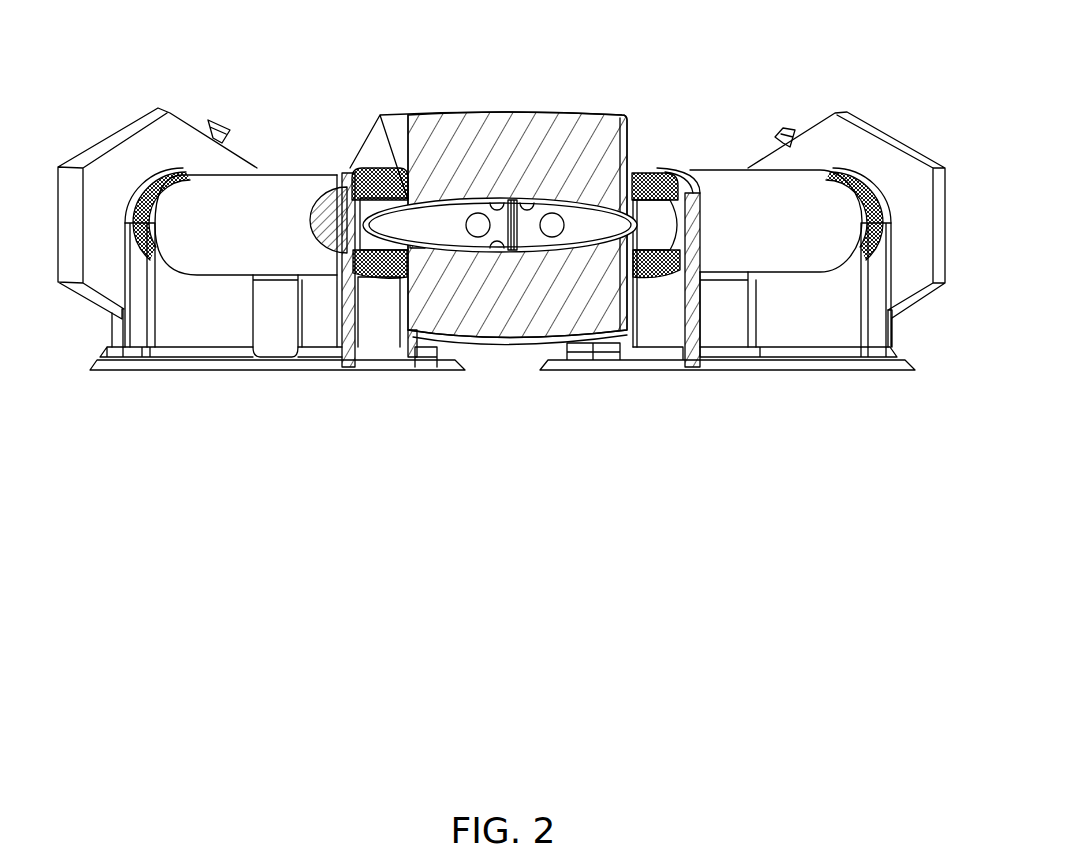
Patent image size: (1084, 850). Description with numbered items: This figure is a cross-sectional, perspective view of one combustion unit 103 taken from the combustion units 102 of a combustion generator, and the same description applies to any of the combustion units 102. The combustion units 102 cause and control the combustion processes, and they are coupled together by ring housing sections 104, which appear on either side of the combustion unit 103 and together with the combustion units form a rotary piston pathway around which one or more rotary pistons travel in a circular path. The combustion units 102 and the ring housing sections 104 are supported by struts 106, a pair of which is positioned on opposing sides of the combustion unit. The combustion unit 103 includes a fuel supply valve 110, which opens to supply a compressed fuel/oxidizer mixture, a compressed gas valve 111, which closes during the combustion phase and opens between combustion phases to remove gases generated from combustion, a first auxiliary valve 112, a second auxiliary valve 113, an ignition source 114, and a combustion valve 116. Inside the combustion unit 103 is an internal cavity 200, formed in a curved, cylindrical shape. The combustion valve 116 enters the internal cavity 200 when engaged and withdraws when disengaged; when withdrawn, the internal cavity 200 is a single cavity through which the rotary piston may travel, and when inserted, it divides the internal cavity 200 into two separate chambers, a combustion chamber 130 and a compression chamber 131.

The combustion unit 102 is at (109, 118).
The combustion unit 103 is at (628, 98).
The ring housing section 104 is at (273, 265).
The strut 106 is at (147, 390).
The fuel supply valve 110 is at (471, 205).
The compressed gas valve 111 is at (553, 212).
The first auxiliary valve 112 is at (524, 203).
The second auxiliary valve 113 is at (497, 202).
The ignition source 114 is at (497, 256).
The combustion valve 116 is at (511, 268).
The combustion chamber 130 is at (476, 250).
The compression chamber 131 is at (528, 250).
The internal cavity 200 is at (606, 188).